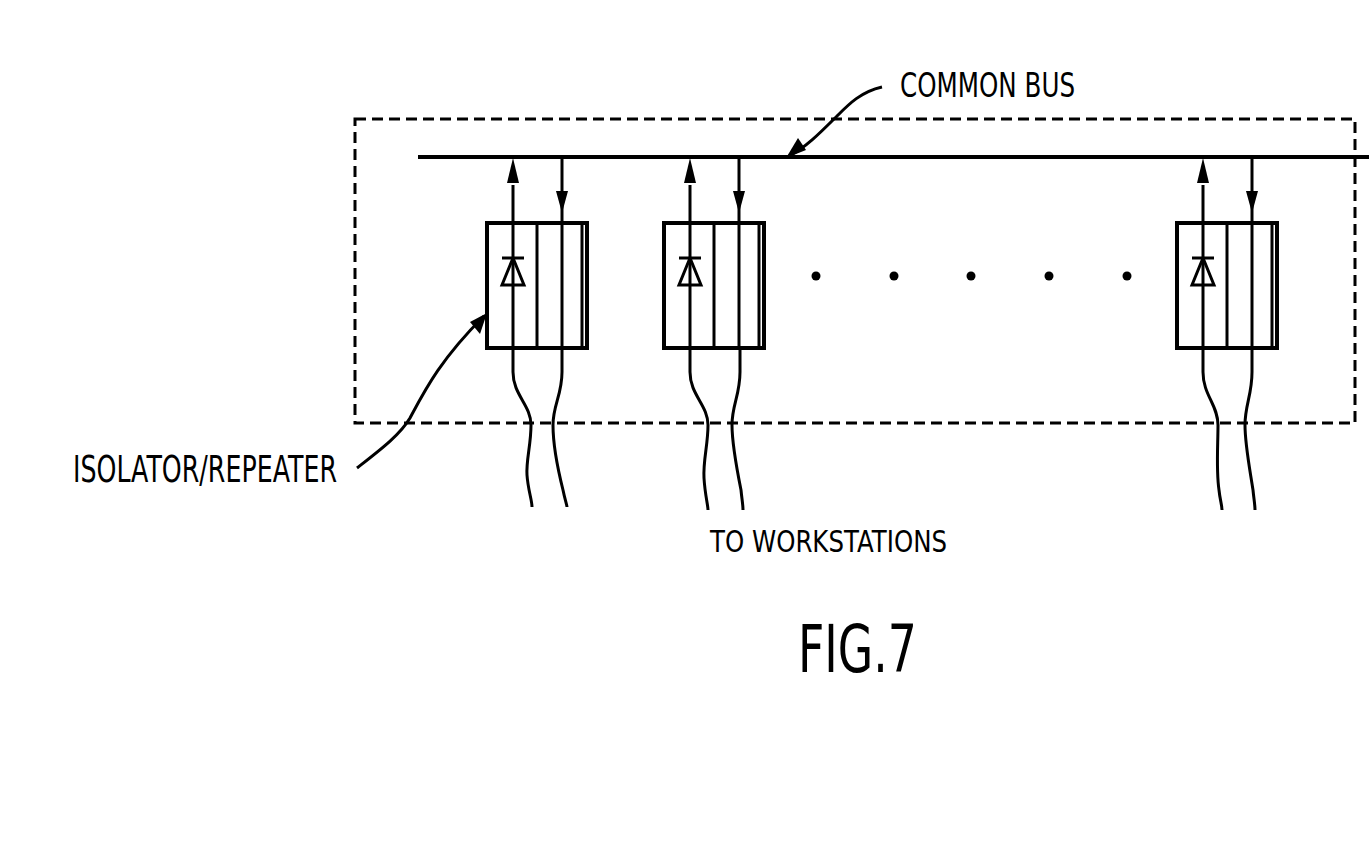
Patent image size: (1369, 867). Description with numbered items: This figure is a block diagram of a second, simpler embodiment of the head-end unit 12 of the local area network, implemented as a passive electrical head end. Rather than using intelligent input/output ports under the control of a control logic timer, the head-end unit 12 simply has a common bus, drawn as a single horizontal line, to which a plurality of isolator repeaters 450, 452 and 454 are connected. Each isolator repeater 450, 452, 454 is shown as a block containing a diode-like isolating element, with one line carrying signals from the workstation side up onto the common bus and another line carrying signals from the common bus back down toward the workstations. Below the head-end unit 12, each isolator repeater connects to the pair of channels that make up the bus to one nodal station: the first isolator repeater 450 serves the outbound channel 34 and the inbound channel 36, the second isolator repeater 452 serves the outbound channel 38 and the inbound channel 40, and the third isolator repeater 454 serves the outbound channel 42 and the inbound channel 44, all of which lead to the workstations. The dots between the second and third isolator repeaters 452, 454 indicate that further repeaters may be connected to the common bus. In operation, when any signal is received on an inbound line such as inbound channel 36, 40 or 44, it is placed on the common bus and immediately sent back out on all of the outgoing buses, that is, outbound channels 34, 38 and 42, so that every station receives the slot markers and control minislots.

The head-end unit 12 is at (352, 185).
The isolator repeater 450 is at (487, 270).
The isolator repeater 452 is at (665, 267).
The isolator repeater 454 is at (1177, 258).
The outbound channel 34 is at (524, 465).
The inbound channel 36 is at (567, 477).
The outbound channel 38 is at (703, 485).
The inbound channel 40 is at (741, 473).
The outbound channel 42 is at (1217, 483).
The inbound channel 44 is at (1256, 483).